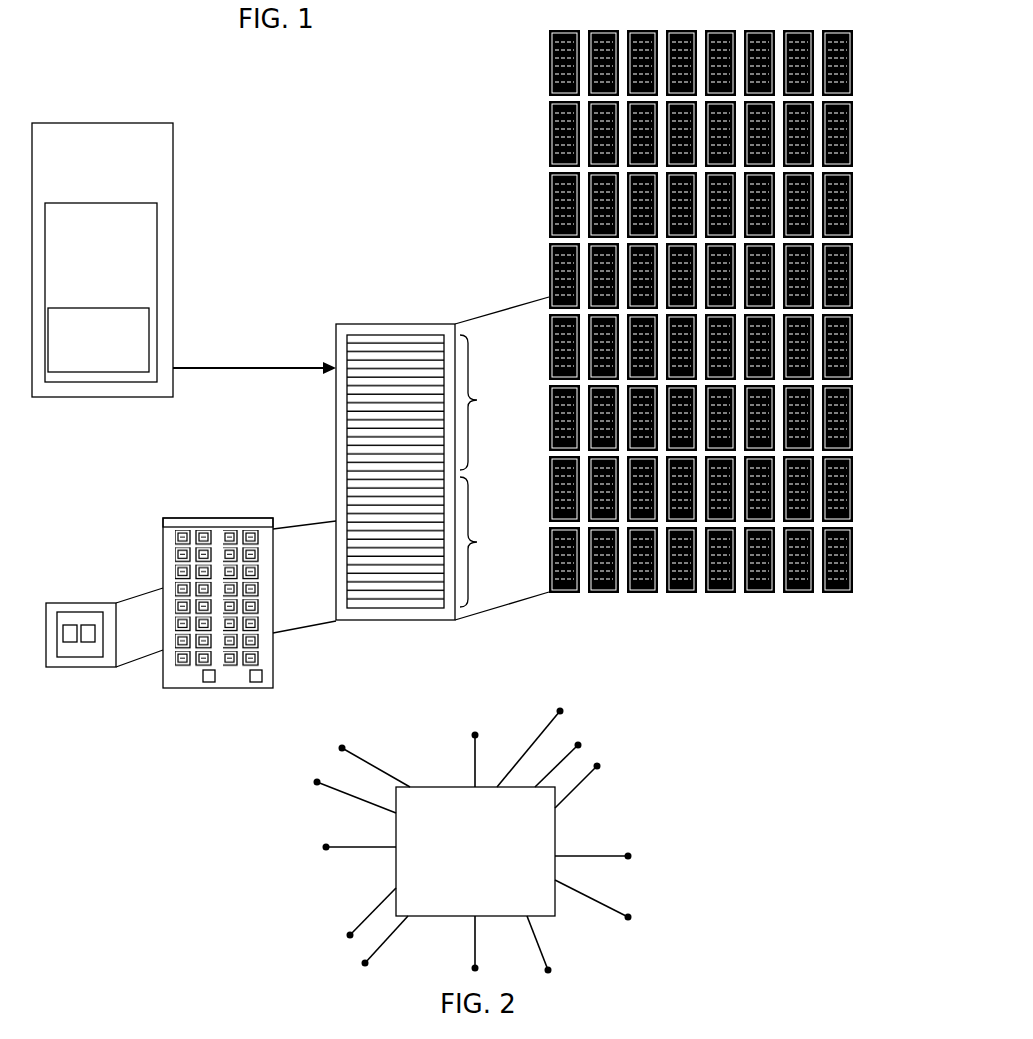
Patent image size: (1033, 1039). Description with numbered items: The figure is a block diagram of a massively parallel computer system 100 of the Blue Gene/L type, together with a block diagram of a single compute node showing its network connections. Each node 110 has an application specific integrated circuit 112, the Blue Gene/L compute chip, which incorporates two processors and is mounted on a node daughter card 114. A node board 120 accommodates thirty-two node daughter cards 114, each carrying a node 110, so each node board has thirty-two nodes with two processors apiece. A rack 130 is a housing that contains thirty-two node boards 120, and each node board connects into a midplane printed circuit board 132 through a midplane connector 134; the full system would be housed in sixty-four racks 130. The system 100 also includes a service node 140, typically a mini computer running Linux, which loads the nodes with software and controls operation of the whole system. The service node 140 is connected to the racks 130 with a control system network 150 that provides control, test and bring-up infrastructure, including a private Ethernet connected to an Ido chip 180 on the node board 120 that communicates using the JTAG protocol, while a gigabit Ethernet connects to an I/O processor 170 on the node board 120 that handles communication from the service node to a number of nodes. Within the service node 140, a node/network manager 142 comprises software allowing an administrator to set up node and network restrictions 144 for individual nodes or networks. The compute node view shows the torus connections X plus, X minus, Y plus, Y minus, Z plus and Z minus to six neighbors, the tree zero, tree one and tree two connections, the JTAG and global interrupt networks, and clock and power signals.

In FIG. 1, the massively parallel computer system 100 is at (246, 127).
In FIG. 1, the node 110 is at (99, 612).
In FIG. 2, the node 110 is at (478, 831).
In FIG. 1, the application specific integrated circuit 112 is at (58, 658).
In FIG. 1, the node daughter card 114 is at (180, 670).
In FIG. 1, the node board 120 is at (302, 592).
In FIG. 1, the rack 130 is at (369, 324).
In FIG. 1, the midplane printed circuit board 132 is at (503, 471).
In FIG. 1, the midplane connector 134 is at (163, 522).
In FIG. 1, the service node 140 is at (135, 260).
In FIG. 1, the node/network manager 142 is at (142, 292).
In FIG. 1, the node and network restrictions 144 is at (150, 338).
In FIG. 1, the control system network 150 is at (210, 367).
In FIG. 1, the I/O processor 170 is at (211, 683).
In FIG. 1, the Ido chip 180 is at (259, 683).